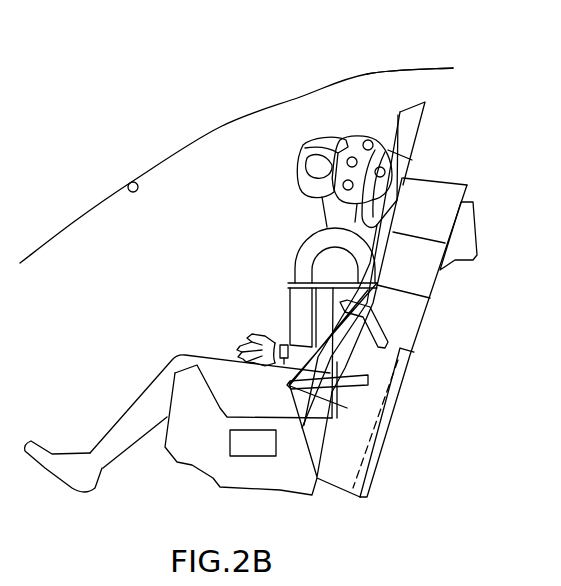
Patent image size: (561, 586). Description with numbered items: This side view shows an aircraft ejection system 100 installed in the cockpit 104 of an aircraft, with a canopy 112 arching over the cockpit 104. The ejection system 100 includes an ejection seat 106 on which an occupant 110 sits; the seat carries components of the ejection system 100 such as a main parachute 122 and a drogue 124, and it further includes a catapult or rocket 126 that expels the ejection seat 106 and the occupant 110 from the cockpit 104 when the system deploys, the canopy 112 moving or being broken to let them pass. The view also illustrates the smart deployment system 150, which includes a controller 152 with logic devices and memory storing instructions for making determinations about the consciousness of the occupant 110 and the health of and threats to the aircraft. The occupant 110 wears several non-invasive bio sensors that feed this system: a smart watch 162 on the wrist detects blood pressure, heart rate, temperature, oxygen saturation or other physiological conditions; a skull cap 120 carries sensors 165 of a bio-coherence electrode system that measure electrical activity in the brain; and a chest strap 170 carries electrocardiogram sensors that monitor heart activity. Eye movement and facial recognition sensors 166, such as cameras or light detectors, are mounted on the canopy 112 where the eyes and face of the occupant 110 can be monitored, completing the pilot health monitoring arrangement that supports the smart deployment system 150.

The aircraft ejection system 100 is at (474, 295).
The cockpit 104 is at (260, 86).
The ejection seat 106 is at (398, 332).
The occupant 110 is at (288, 262).
The canopy 112 is at (425, 63).
The skull cap 120 is at (354, 140).
The main parachute 122 is at (452, 202).
The drogue 124 is at (468, 242).
The rocket 126 is at (407, 373).
The smart deployment system 150 is at (269, 472).
The controller 152 is at (253, 443).
The smart watch 162 is at (284, 344).
The sensors 165 is at (370, 141).
The eye movement and/or facial recognition sensors 166 is at (135, 192).
The chest strap 170 is at (287, 285).